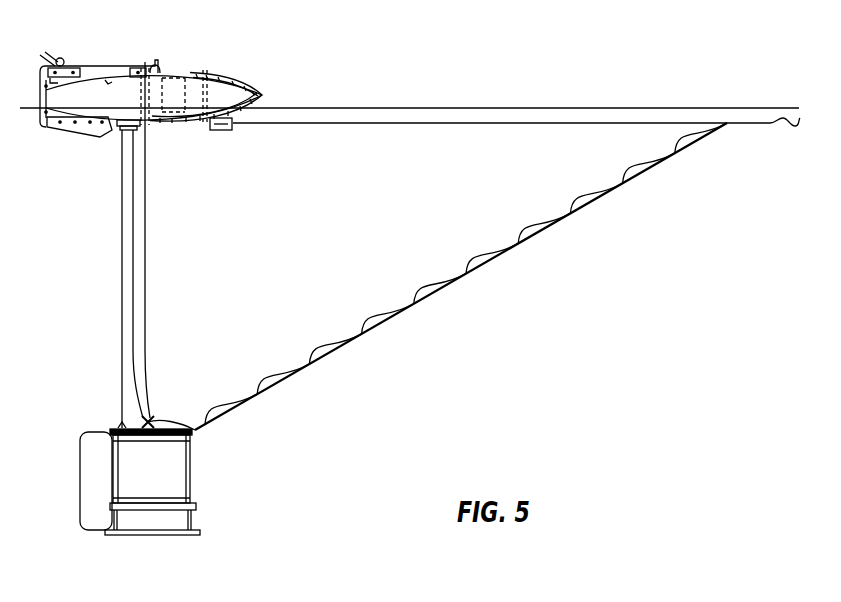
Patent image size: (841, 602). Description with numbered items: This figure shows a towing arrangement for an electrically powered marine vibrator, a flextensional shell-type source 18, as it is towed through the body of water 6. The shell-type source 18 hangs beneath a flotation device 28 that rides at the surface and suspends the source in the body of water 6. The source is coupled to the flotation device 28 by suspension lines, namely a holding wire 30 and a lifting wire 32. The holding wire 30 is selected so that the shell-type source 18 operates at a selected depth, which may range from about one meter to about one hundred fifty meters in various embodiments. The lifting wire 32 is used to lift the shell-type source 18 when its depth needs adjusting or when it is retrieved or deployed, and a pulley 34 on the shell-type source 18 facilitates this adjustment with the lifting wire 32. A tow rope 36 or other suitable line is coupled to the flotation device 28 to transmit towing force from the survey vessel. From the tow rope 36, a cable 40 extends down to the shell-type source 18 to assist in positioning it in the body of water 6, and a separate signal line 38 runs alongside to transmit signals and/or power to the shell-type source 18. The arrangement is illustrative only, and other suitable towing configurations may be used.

The body of water 6 is at (131, 246).
The flextensional shell-type source 18 is at (192, 472).
The flotation device 28 is at (182, 75).
The holding wire 30 is at (122, 332).
The lifting wire 32 is at (146, 320).
The pulley 34 is at (152, 415).
The tow rope 36 is at (385, 122).
The signal line 38 is at (495, 250).
The cable 40 is at (440, 290).